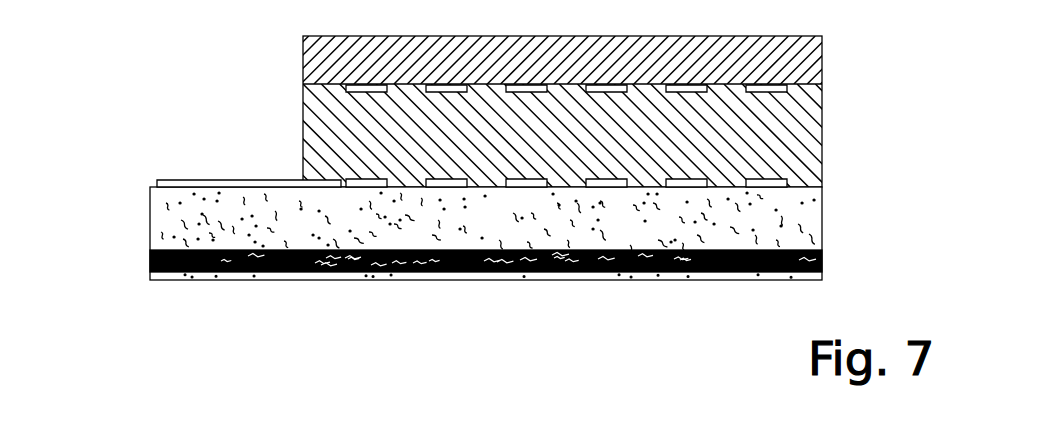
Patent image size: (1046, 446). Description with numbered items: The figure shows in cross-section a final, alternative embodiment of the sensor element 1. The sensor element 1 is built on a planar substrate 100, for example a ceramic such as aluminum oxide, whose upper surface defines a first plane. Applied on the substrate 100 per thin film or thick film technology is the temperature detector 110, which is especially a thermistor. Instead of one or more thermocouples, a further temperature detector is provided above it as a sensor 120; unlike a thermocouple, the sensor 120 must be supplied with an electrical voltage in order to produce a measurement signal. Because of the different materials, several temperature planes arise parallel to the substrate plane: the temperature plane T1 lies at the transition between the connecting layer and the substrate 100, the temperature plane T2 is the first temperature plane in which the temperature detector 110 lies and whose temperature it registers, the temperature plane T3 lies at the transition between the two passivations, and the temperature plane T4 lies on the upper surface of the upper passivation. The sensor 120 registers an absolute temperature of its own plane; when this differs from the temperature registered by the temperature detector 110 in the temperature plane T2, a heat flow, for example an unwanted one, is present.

The sensor element 1 is at (485, 158).
The substrate 100 is at (802, 228).
The temperature detector 110 is at (766, 181).
The sensor 120 is at (783, 86).
The temperature plane T1 is at (272, 279).
The temperature plane T2 is at (278, 165).
The temperature plane T3 is at (278, 86).
The temperature plane T4 is at (278, 35).